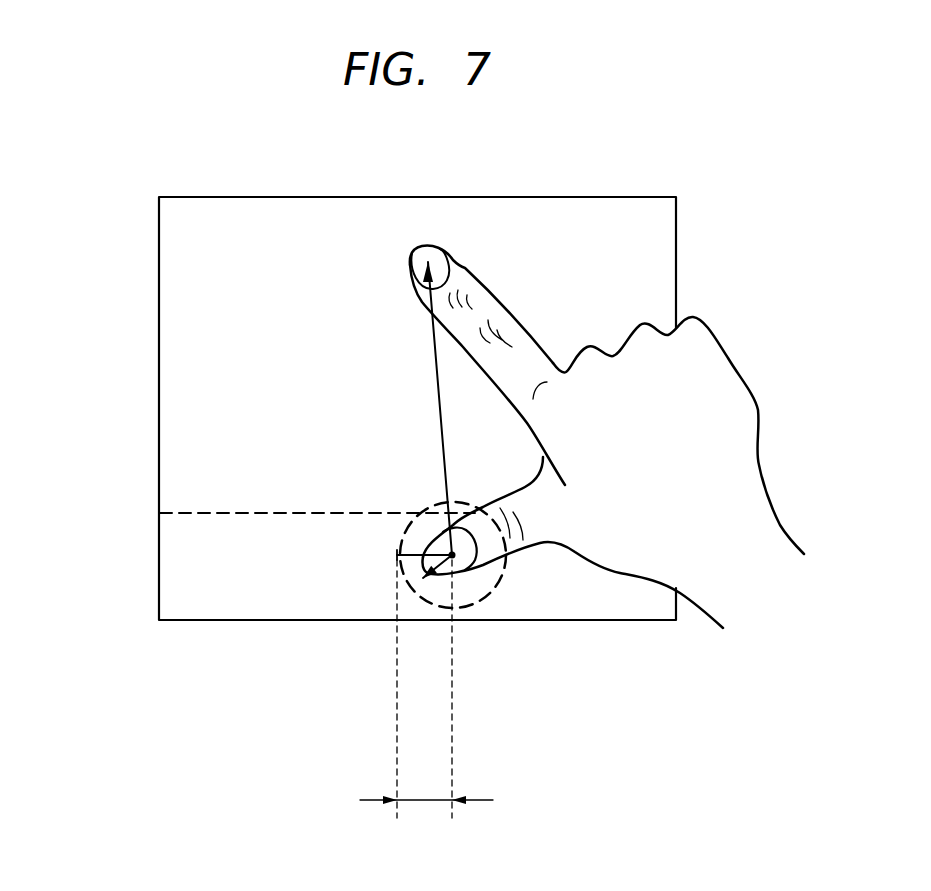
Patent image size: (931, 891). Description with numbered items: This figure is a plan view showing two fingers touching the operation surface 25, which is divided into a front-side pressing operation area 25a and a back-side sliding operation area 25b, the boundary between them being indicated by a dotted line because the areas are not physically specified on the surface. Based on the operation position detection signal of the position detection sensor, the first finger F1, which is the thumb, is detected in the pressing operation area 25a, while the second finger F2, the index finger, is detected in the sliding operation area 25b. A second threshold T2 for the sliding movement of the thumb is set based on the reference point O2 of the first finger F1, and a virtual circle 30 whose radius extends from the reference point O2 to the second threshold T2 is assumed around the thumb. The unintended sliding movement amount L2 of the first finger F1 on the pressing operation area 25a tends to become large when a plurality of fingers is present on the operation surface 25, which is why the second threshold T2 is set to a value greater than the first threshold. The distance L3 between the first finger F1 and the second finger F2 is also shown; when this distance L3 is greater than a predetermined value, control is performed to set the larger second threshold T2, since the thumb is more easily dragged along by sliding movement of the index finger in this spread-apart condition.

The operation surface 25 is at (347, 408).
The pressing operation area 25a is at (370, 566).
The sliding operation area 25b is at (177, 392).
The virtual circle 30 is at (398, 541).
The first finger F1 is at (533, 532).
The second finger F2 is at (485, 308).
The sliding movement amount L2 is at (440, 553).
The distance between the plurality of fingers L3 is at (437, 383).
The reference point O2 is at (452, 555).
The second threshold T2 is at (426, 697).